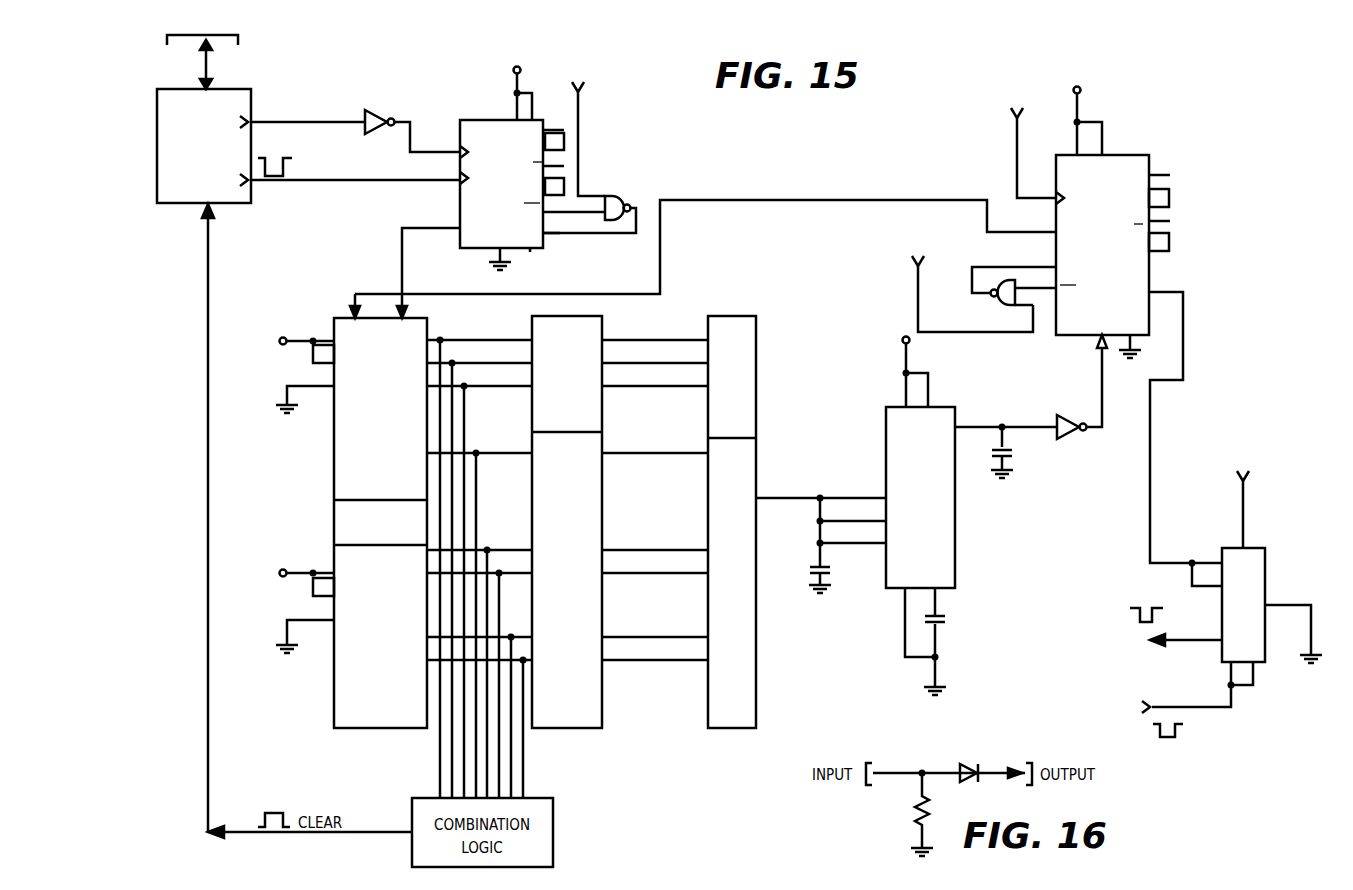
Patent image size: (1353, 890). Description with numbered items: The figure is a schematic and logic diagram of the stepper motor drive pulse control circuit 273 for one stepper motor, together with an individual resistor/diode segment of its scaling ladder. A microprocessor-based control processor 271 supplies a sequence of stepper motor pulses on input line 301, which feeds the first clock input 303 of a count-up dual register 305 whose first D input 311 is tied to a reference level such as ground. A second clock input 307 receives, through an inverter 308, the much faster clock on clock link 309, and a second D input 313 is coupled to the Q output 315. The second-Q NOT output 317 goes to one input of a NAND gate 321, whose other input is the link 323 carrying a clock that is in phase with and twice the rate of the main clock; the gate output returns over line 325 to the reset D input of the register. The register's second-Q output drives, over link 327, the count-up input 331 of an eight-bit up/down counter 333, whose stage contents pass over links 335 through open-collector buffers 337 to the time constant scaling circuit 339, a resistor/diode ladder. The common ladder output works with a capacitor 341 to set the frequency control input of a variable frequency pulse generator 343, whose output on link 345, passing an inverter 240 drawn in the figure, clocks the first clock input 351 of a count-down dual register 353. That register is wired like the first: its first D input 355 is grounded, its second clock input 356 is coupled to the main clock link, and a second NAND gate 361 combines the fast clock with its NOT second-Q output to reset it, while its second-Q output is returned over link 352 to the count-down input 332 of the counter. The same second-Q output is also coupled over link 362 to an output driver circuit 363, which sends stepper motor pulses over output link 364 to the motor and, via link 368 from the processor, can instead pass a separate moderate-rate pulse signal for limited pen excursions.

The control processor 271 is at (222, 89).
The clock link 309 is at (270, 122).
The inverter 308 is at (380, 110).
The input line 301 is at (283, 184).
The second clock input 307 is at (445, 176).
The first clock input 303 is at (445, 188).
The count-up dual register 305 is at (487, 120).
The Q output 315 is at (548, 118).
The link 323 is at (584, 110).
The second D input 313 is at (580, 158).
The NAND gate 321 is at (610, 195).
The 2Q NOT output 317 is at (568, 222).
The line 325 is at (598, 238).
The first D input 311 is at (530, 250).
The link 327 is at (402, 240).
The link 352 is at (772, 200).
The stepper motor drive pulse control circuit 273 is at (806, 254).
The count-up input 331 is at (408, 312).
The count-down input 332 is at (348, 314).
The up/down counter 333 is at (334, 440).
The links 335 is at (450, 414).
The open-collector buffers 337 is at (602, 468).
The time constant scaling circuit 339 is at (756, 438).
The capacitor 341 is at (812, 568).
The variable frequency pulse generator 343 is at (955, 550).
The link 345 is at (990, 424).
The first clock input 351 is at (1102, 372).
The inverter 240 is at (1070, 414).
The count-down dual register 353 is at (1138, 155).
The first D input 355 is at (1138, 342).
The second clock input 356 is at (1056, 170).
The second NAND gate 361 is at (999, 302).
The link 362 is at (1183, 345).
The output driver circuit 363 is at (1260, 548).
The output link 364 is at (1188, 648).
The link 368 is at (1243, 510).